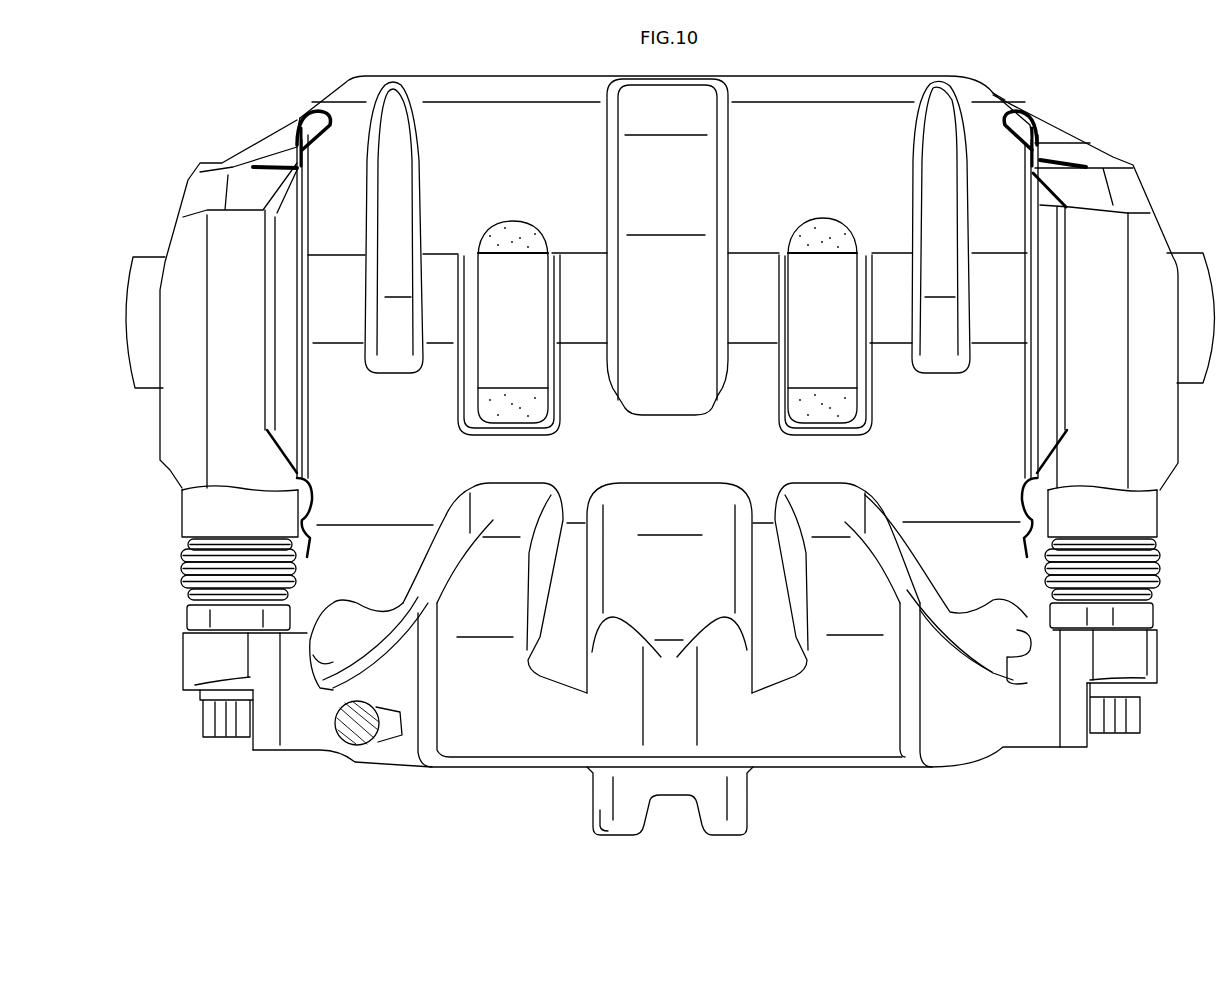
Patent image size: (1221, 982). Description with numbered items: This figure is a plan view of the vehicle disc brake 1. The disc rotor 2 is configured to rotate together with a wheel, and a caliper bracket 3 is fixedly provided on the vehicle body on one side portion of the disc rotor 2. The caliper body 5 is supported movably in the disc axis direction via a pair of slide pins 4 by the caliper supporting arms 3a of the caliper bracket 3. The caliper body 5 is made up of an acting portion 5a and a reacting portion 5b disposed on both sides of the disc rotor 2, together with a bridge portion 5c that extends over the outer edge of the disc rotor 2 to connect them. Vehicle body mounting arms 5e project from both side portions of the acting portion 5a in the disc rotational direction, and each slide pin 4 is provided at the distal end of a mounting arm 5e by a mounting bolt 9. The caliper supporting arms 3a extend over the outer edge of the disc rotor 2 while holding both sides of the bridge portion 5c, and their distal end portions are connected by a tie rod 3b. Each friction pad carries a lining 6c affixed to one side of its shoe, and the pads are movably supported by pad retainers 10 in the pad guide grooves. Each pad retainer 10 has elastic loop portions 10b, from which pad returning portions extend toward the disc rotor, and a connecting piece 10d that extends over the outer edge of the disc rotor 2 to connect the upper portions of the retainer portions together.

The vehicle disc brake 1 is at (675, 66).
The disc rotor 2 is at (1187, 253).
The caliper bracket 3 is at (1146, 183).
The caliper supporting arm 3a is at (172, 465).
The tie rod 3b is at (1005, 93).
The slide pin 4 is at (185, 612).
The caliper body 5 is at (870, 772).
The acting portion 5a is at (553, 747).
The reacting portion 5b is at (367, 90).
The bridge portion 5c is at (573, 305).
The vehicle body mounting arm 5e is at (185, 660).
The lining 6c is at (505, 395).
The mounting bolt 9 is at (233, 724).
The pad retainer 10 is at (293, 137).
The elastic loop portion 10b is at (297, 116).
The connecting piece 10d is at (283, 299).